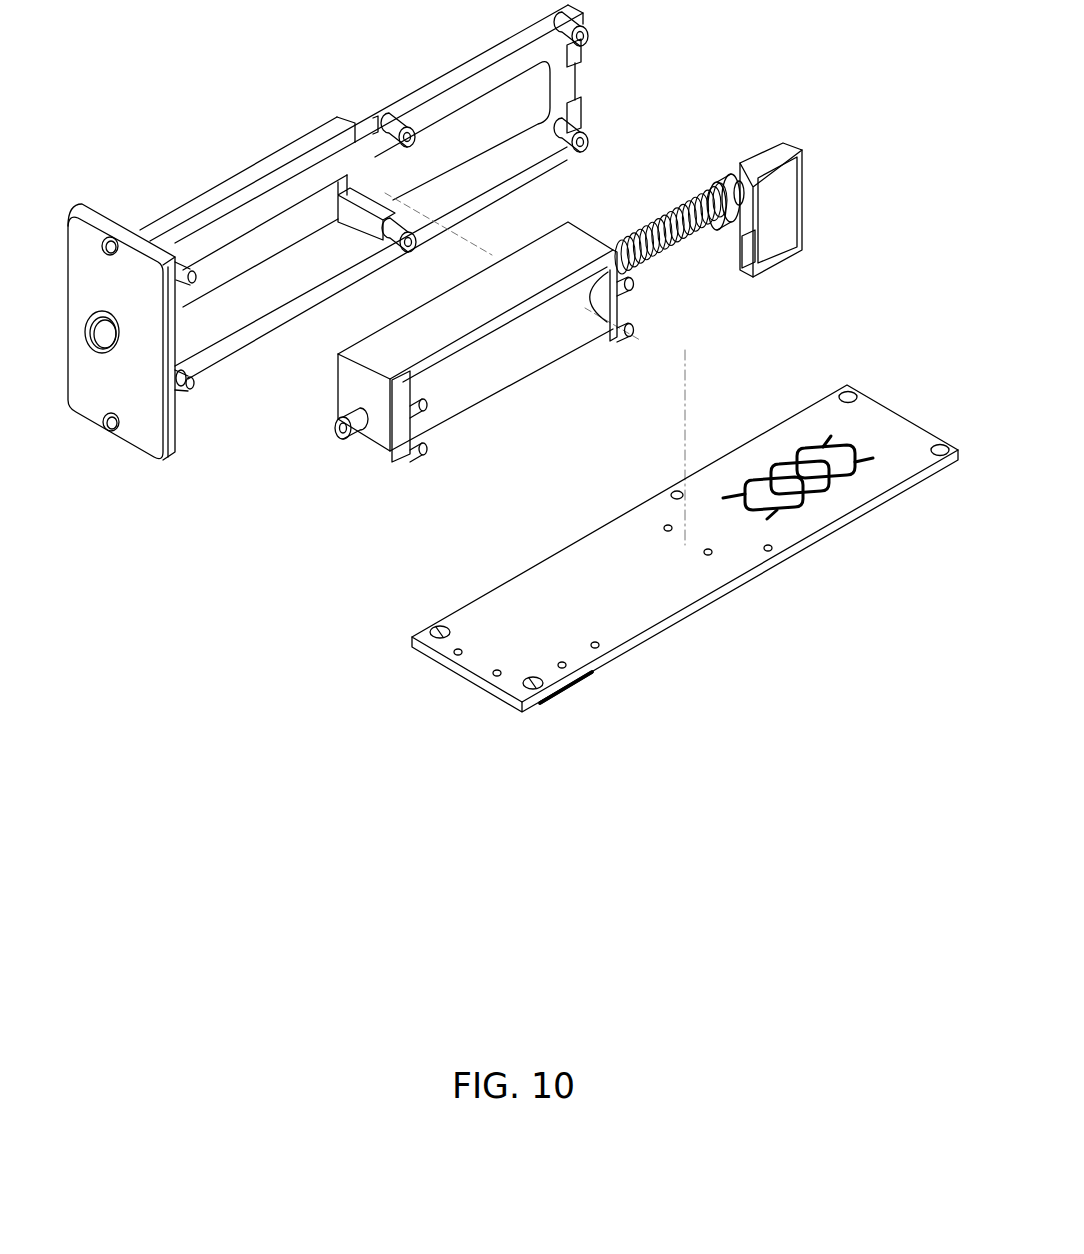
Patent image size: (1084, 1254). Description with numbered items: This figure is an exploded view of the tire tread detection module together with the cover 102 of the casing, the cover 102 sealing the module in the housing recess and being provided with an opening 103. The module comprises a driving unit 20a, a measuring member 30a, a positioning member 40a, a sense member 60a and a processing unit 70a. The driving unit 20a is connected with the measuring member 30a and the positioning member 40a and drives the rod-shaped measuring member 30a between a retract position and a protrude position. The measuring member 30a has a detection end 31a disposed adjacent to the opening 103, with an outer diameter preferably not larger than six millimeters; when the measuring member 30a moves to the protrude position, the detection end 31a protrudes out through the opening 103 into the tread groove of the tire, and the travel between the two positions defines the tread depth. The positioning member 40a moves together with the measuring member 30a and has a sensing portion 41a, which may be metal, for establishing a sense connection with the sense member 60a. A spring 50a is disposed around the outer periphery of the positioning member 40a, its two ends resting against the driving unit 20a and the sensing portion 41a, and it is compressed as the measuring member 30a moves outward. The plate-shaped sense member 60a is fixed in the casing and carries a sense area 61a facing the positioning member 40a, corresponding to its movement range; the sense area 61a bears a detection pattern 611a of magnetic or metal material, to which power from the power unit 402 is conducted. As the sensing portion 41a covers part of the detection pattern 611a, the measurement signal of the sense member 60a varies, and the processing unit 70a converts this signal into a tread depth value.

The cover 102 is at (85, 248).
The opening 103 is at (100, 338).
The driving unit 20a is at (483, 410).
The measuring member 30a is at (362, 445).
The detection end 31a is at (336, 415).
The positioning member 40a is at (710, 164).
The sensing portion 41a is at (773, 210).
The spring 50a is at (695, 245).
The sense member 60a is at (736, 619).
The sense area 61a is at (812, 510).
The detection pattern 611a is at (855, 470).
The processing unit 70a is at (578, 698).
The power unit 402 is at (578, 698).